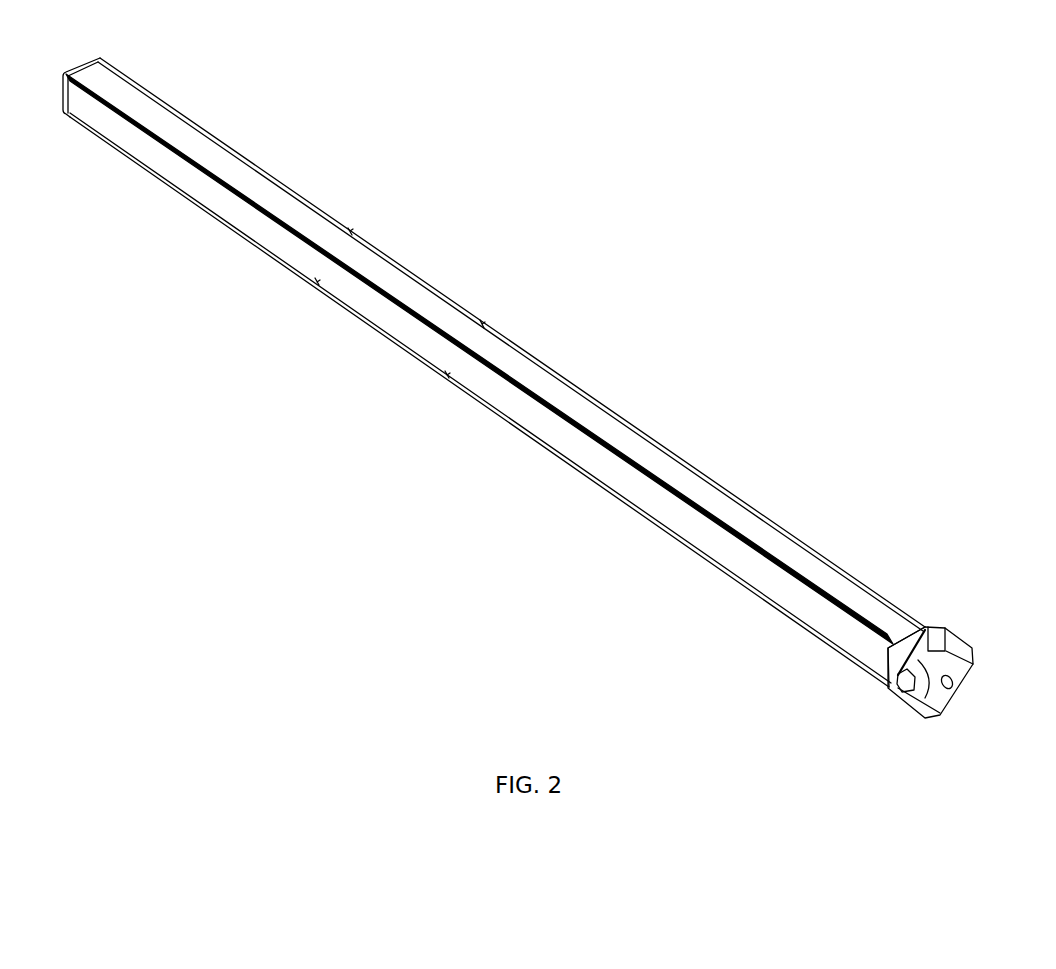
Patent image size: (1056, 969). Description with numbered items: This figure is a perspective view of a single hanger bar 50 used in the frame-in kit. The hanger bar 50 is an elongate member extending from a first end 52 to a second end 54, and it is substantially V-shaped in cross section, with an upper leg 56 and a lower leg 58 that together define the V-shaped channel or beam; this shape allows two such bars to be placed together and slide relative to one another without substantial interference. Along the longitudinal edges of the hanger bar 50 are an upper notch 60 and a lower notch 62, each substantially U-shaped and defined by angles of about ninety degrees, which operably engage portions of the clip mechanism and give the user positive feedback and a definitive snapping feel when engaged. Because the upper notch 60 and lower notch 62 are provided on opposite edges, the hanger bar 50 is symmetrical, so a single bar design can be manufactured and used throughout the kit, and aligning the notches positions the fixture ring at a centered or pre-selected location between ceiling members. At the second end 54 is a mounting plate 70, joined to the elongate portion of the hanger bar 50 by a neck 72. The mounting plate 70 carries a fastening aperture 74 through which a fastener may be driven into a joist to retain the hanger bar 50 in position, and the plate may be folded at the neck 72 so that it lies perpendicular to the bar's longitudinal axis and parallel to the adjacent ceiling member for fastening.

The hanger bar 50 is at (555, 417).
The first end 52 is at (494, 372).
The second end 54 is at (903, 576).
The upper leg 56 is at (286, 202).
The lower leg 58 is at (252, 224).
The upper notch 60 is at (434, 287).
The lower notch 62 is at (404, 353).
The mounting plate 70 is at (967, 663).
The neck 72 is at (919, 704).
The fastening aperture 74 is at (951, 694).